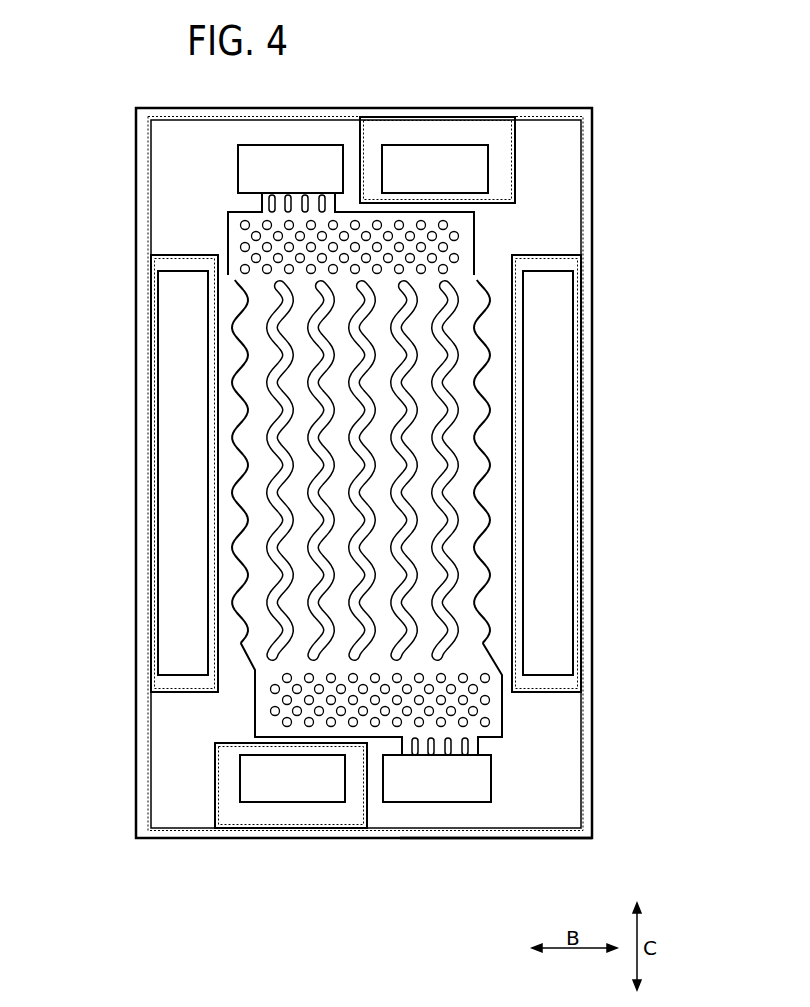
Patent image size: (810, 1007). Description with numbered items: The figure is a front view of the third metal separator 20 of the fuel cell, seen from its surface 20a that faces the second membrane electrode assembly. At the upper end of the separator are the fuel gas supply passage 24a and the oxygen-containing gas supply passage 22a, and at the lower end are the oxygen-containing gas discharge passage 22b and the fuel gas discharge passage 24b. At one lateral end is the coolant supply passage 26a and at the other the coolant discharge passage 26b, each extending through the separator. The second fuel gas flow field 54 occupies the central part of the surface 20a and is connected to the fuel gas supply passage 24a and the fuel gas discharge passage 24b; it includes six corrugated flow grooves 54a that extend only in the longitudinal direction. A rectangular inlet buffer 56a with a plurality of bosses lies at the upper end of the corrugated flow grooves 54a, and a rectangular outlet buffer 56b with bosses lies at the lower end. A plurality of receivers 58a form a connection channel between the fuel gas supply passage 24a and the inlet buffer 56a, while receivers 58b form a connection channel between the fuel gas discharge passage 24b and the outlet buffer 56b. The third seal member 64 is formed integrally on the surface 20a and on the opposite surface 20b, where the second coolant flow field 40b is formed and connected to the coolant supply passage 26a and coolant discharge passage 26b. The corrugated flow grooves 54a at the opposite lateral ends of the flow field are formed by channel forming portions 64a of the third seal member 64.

The third metal separator 20 is at (571, 68).
The surface 20a is at (545, 812).
The surface 20b is at (485, 818).
The oxygen-containing gas supply passage 22a is at (437, 160).
The oxygen-containing gas discharge passage 22b is at (291, 785).
The fuel gas supply passage 24a is at (290, 169).
The fuel gas discharge passage 24b is at (437, 778).
The coolant supply passage 26a is at (542, 419).
The coolant discharge passage 26b is at (187, 418).
The second coolant flow field 40b is at (468, 568).
The second fuel gas flow field 54 is at (407, 476).
The corrugated flow grooves 54a is at (470, 388).
The inlet buffer 56a is at (456, 257).
The outlet buffer 56b is at (285, 722).
The receivers 58a is at (262, 204).
The receivers 58b is at (453, 742).
The third seal member 64 is at (441, 120).
The channel forming portions 64a is at (238, 508).